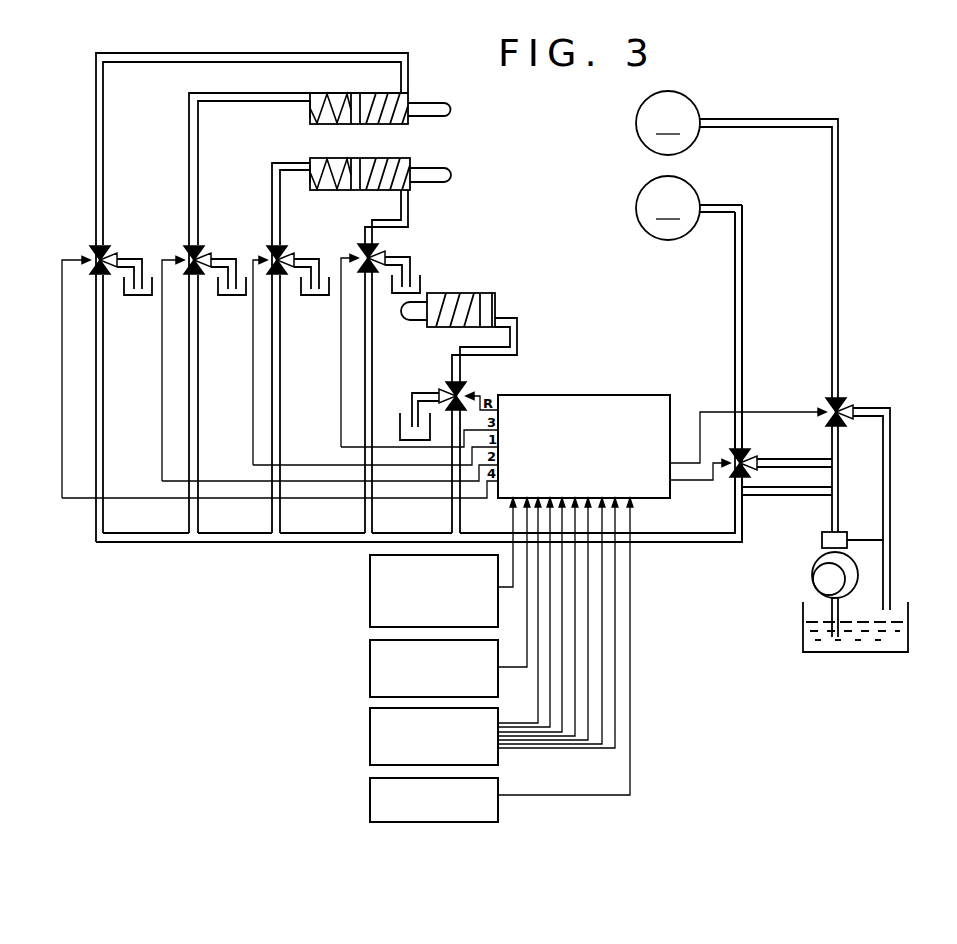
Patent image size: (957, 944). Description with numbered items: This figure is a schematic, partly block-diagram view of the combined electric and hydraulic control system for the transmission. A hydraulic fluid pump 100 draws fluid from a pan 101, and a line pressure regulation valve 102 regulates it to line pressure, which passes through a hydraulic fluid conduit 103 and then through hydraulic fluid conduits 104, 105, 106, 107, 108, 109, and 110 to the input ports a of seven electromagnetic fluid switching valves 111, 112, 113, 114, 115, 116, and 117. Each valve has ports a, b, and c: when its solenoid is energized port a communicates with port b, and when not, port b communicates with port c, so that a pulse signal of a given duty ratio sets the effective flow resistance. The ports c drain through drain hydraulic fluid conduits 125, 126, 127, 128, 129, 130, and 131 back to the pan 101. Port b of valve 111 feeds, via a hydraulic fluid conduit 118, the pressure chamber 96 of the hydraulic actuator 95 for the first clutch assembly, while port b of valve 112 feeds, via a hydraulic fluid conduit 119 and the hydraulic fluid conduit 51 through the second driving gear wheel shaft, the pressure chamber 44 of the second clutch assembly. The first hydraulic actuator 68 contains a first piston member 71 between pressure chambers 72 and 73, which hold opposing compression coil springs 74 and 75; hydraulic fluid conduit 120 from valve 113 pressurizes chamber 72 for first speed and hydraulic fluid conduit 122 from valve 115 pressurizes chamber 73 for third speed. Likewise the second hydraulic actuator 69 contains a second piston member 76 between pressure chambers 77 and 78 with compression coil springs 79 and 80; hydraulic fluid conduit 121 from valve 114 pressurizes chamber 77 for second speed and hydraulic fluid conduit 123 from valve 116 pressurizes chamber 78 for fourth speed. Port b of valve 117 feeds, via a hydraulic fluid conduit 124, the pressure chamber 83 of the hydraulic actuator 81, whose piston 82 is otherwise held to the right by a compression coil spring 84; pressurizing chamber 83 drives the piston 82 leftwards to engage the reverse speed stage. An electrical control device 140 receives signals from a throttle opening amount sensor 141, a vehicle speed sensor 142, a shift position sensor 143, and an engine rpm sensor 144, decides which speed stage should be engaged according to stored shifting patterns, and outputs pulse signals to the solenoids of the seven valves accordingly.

The pressure chamber 44 is at (668, 208).
The hydraulic fluid conduit 51 is at (704, 213).
The first hydraulic actuator 68 is at (340, 190).
The second hydraulic actuator 69 is at (361, 125).
The first piston member 71 is at (357, 190).
The pressure chamber 72 is at (323, 190).
The pressure chamber 73 is at (392, 190).
The compression coil spring 74 is at (310, 184).
The compression coil spring 75 is at (411, 162).
The second piston member 76 is at (361, 93).
The pressure chamber 77 is at (323, 93).
The pressure chamber 78 is at (405, 125).
The compression coil spring 79 is at (310, 116).
The compression coil spring 80 is at (410, 97).
The hydraulic actuator 81 is at (462, 293).
The piston 82 is at (490, 293).
The pressure chamber 83 is at (497, 300).
The compression coil spring 84 is at (425, 320).
The hydraulic actuator 95 is at (646, 123).
The pressure chamber 96 is at (636, 126).
The hydraulic fluid pump 100 is at (813, 578).
The pan 101 is at (137, 296).
The line pressure regulation valve 102 is at (822, 540).
The hydraulic fluid conduit 103 is at (839, 510).
The hydraulic fluid conduit 104 is at (840, 447).
The hydraulic fluid conduit 105 is at (747, 490).
The hydraulic fluid conduit 106 is at (281, 388).
The hydraulic fluid conduit 107 is at (199, 388).
The hydraulic fluid conduit 108 is at (370, 393).
The hydraulic fluid conduit 109 is at (104, 388).
The hydraulic fluid conduit 110 is at (461, 517).
The electromagnetic fluid switching valve 111 is at (826, 402).
The electromagnetic fluid switching valve 112 is at (748, 452).
The electromagnetic fluid switching valve 113 is at (283, 251).
The electromagnetic fluid switching valve 114 is at (201, 248).
The electromagnetic fluid switching valve 115 is at (375, 250).
The electromagnetic fluid switching valve 116 is at (107, 248).
The electromagnetic fluid switching valve 117 is at (466, 392).
The hydraulic fluid conduit 118 is at (840, 360).
The hydraulic fluid conduit 119 is at (744, 360).
The hydraulic fluid conduit 120 is at (273, 200).
The hydraulic fluid conduit 121 is at (199, 170).
The hydraulic fluid conduit 122 is at (409, 203).
The hydraulic fluid conduit 123 is at (104, 185).
The hydraulic fluid conduit 124 is at (502, 349).
The drain hydraulic fluid conduit 125 is at (892, 427).
The drain hydraulic fluid conduit 126 is at (808, 458).
The drain hydraulic fluid conduit 127 is at (311, 265).
The drain hydraulic fluid conduit 128 is at (228, 262).
The drain hydraulic fluid conduit 129 is at (410, 262).
The drain hydraulic fluid conduit 130 is at (135, 262).
The drain hydraulic fluid conduit 131 is at (412, 392).
The electrical control device 140 is at (641, 395).
The throttle opening amount sensor 141 is at (370, 591).
The vehicle speed sensor 142 is at (370, 672).
The shift position sensor 143 is at (370, 733).
The engine rpm sensor 144 is at (370, 800).